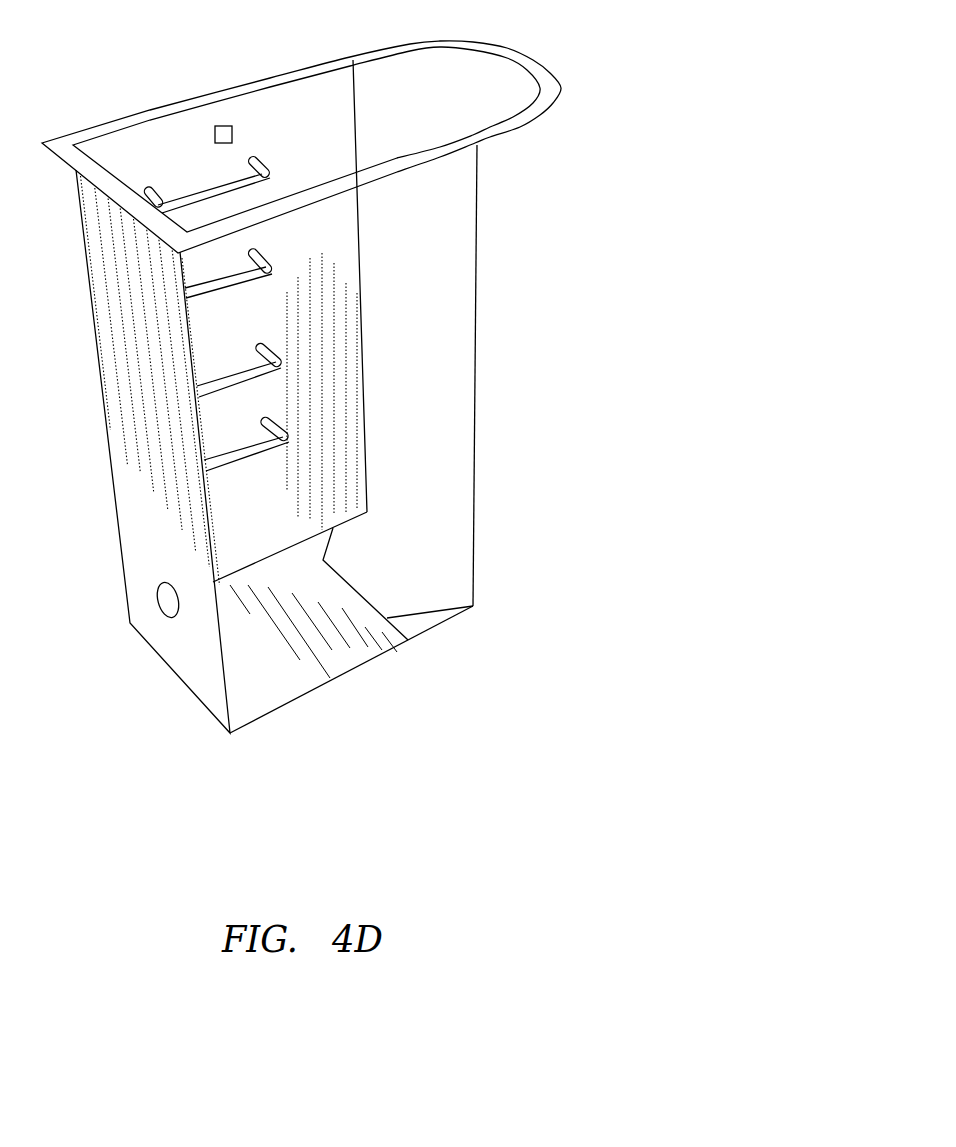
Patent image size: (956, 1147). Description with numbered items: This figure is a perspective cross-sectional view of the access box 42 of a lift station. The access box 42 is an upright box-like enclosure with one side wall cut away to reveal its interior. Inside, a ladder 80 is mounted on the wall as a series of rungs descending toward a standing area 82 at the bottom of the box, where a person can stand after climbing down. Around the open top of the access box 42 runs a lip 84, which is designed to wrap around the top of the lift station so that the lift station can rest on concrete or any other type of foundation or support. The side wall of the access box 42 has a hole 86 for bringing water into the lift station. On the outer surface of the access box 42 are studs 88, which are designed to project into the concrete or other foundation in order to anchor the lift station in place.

The access box 42 is at (305, 698).
The ladder 80 is at (271, 265).
The standing area 82 is at (368, 633).
The lip 84 is at (557, 72).
The hole 86 is at (157, 593).
The studs 88 is at (234, 132).